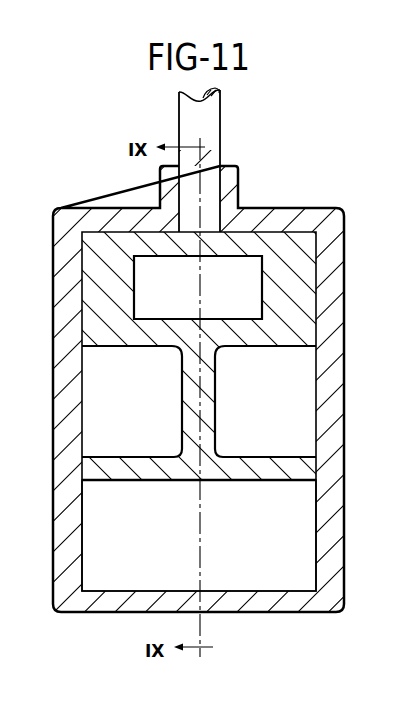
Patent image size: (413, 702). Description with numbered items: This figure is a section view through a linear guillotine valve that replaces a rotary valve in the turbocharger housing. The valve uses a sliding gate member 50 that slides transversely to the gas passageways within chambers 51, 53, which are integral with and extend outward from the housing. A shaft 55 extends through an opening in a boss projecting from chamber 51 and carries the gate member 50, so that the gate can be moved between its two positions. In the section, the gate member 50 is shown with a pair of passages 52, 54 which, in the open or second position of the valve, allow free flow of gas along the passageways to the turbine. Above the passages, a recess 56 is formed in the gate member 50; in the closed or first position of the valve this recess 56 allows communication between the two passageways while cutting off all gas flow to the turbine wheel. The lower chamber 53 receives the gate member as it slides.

The sliding gate member 50 is at (305, 307).
The chamber 51 is at (343, 250).
The passage 52 is at (139, 411).
The chamber 53 is at (338, 532).
The passage 54 is at (279, 411).
The shaft 55 is at (217, 109).
The recess 56 is at (242, 267).